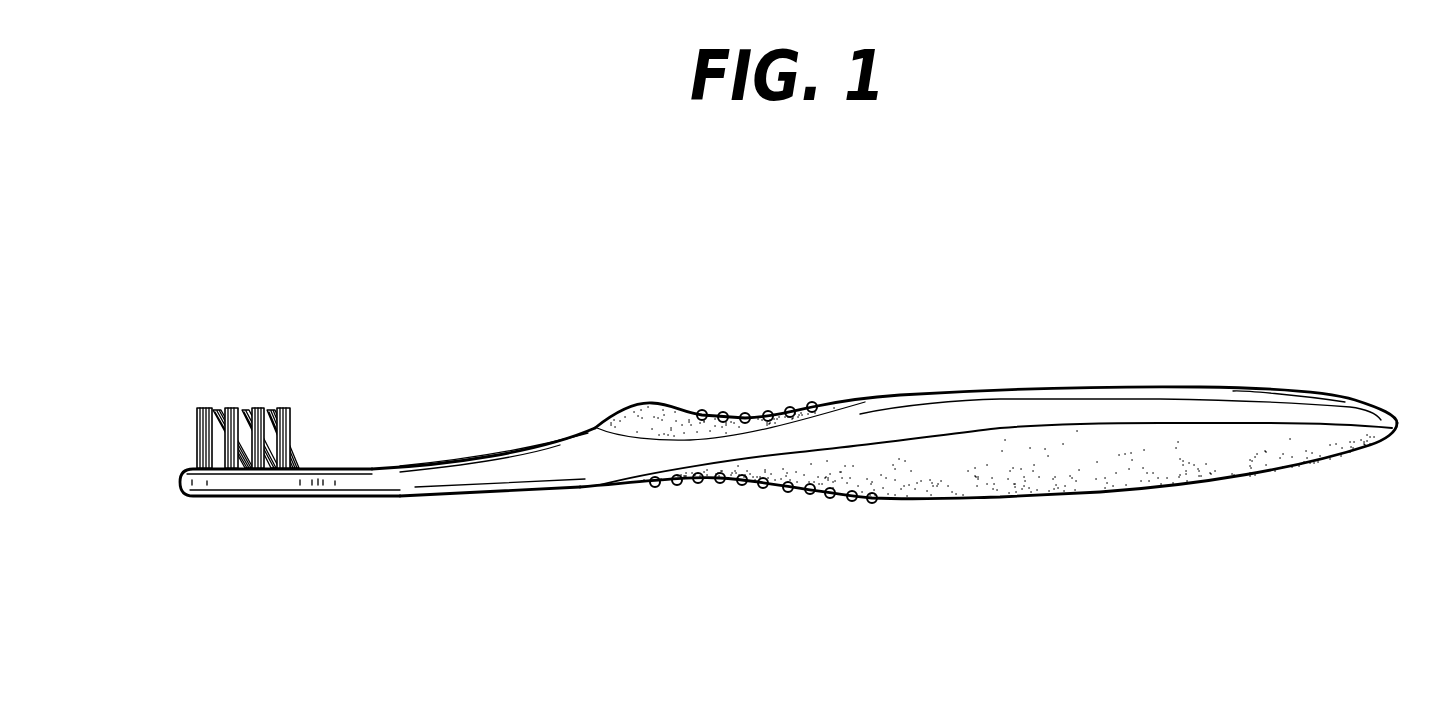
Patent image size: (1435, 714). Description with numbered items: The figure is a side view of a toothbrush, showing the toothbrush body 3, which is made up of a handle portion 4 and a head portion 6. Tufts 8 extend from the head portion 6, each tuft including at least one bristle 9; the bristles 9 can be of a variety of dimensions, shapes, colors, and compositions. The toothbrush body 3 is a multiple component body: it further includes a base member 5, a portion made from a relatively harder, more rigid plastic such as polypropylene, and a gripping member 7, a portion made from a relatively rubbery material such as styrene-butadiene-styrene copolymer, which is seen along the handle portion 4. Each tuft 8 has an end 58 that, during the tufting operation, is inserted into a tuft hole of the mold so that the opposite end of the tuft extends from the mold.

The toothbrush body 3 is at (1039, 368).
The handle portion 4 is at (1041, 515).
The base member 5 is at (600, 455).
The head portion 6 is at (254, 516).
The gripping member 7 is at (733, 427).
The tufts 8 is at (217, 408).
The bristle 9 is at (258, 408).
The end of tuft 58 is at (211, 396).